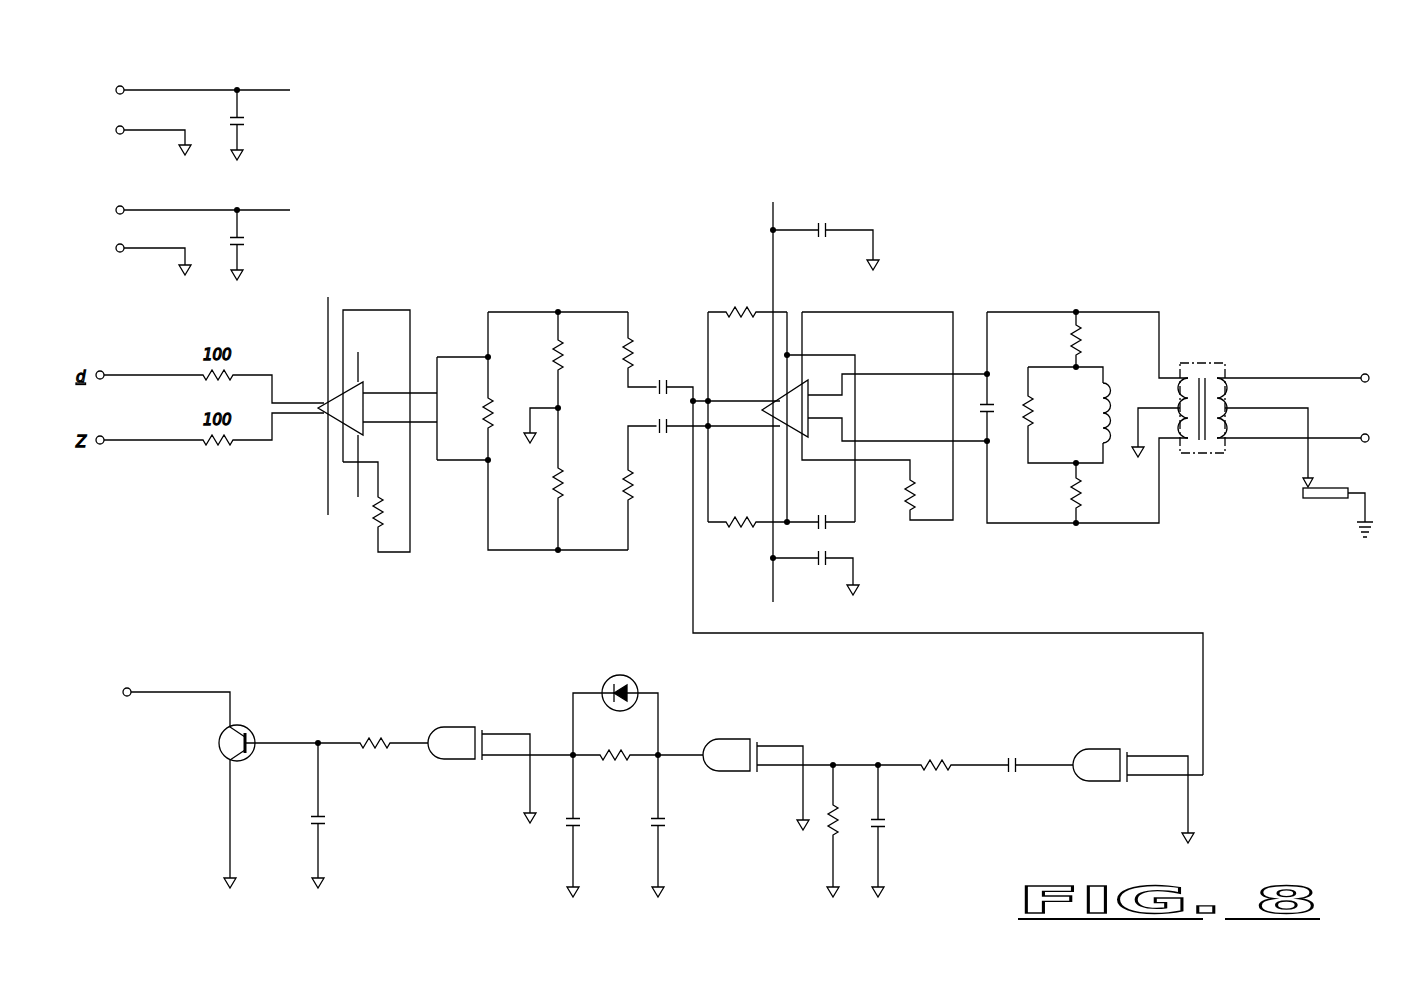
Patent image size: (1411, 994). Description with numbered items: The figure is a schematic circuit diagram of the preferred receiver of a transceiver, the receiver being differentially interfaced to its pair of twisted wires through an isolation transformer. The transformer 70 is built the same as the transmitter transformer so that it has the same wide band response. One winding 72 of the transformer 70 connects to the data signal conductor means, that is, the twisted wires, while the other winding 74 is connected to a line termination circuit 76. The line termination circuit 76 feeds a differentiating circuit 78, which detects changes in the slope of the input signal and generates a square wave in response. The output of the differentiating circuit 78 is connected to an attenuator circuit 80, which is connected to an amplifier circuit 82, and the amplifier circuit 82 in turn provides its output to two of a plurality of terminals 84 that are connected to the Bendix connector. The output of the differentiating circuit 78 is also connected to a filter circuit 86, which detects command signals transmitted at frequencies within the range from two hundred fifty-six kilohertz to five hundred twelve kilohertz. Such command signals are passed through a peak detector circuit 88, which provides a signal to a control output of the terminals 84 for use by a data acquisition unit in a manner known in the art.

The transformer 70 is at (1211, 458).
The winding 72 is at (1224, 388).
The other winding 74 is at (1172, 386).
The line termination circuit 76 is at (1095, 298).
The differentiating circuit 78 is at (901, 284).
The attenuator circuit 80 is at (597, 282).
The amplifier circuit 82 is at (389, 302).
The terminals 84 is at (130, 88).
The filter circuit 86 is at (925, 798).
The peak detector circuit 88 is at (479, 674).